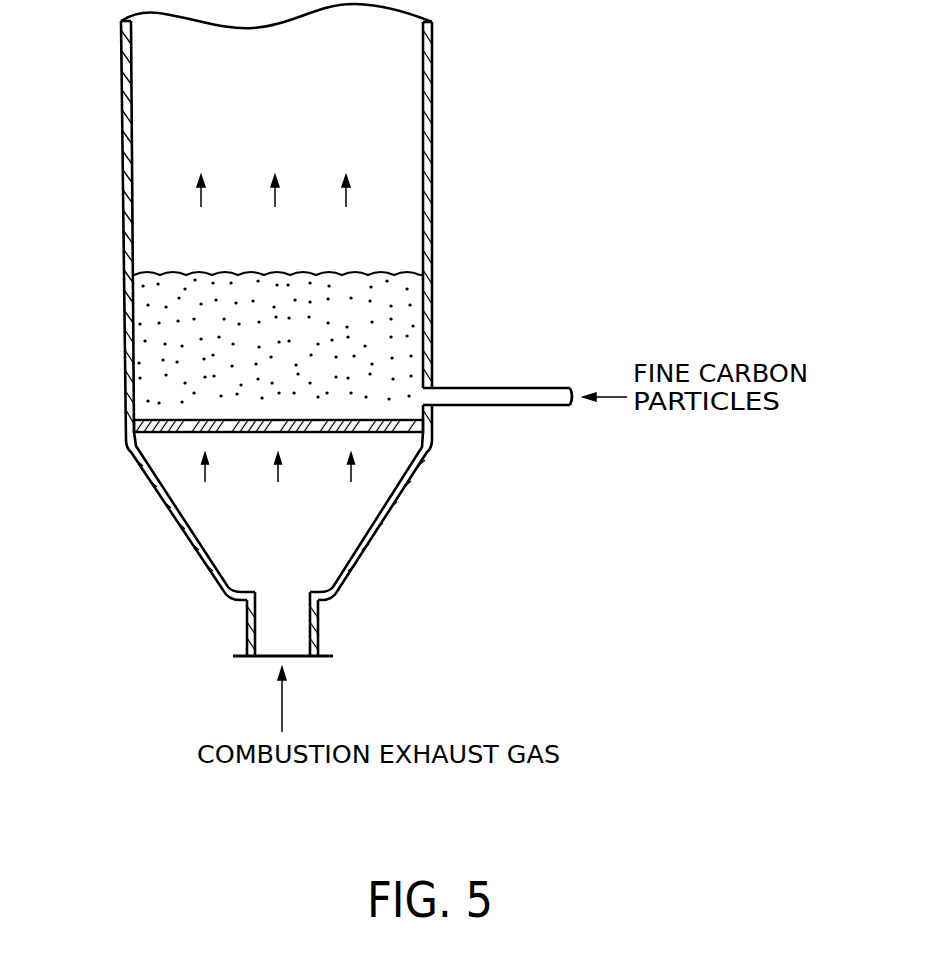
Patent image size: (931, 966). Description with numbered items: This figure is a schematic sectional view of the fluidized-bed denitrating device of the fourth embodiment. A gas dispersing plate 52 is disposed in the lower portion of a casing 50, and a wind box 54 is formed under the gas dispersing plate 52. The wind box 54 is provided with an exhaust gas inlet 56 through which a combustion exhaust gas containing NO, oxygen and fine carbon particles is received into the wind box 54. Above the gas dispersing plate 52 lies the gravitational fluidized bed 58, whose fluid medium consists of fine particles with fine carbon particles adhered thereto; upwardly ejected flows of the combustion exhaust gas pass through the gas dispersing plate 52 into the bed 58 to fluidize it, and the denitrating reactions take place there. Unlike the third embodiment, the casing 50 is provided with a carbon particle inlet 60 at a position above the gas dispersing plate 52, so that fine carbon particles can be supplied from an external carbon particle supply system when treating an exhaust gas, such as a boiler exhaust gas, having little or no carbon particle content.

The casing 50 is at (432, 193).
The gas dispersing plate 52 is at (153, 433).
The wind box 54 is at (355, 528).
The exhaust gas inlet 56 is at (318, 624).
The gravitational fluidized bed 58 is at (406, 328).
The carbon particle inlet 60 is at (460, 407).